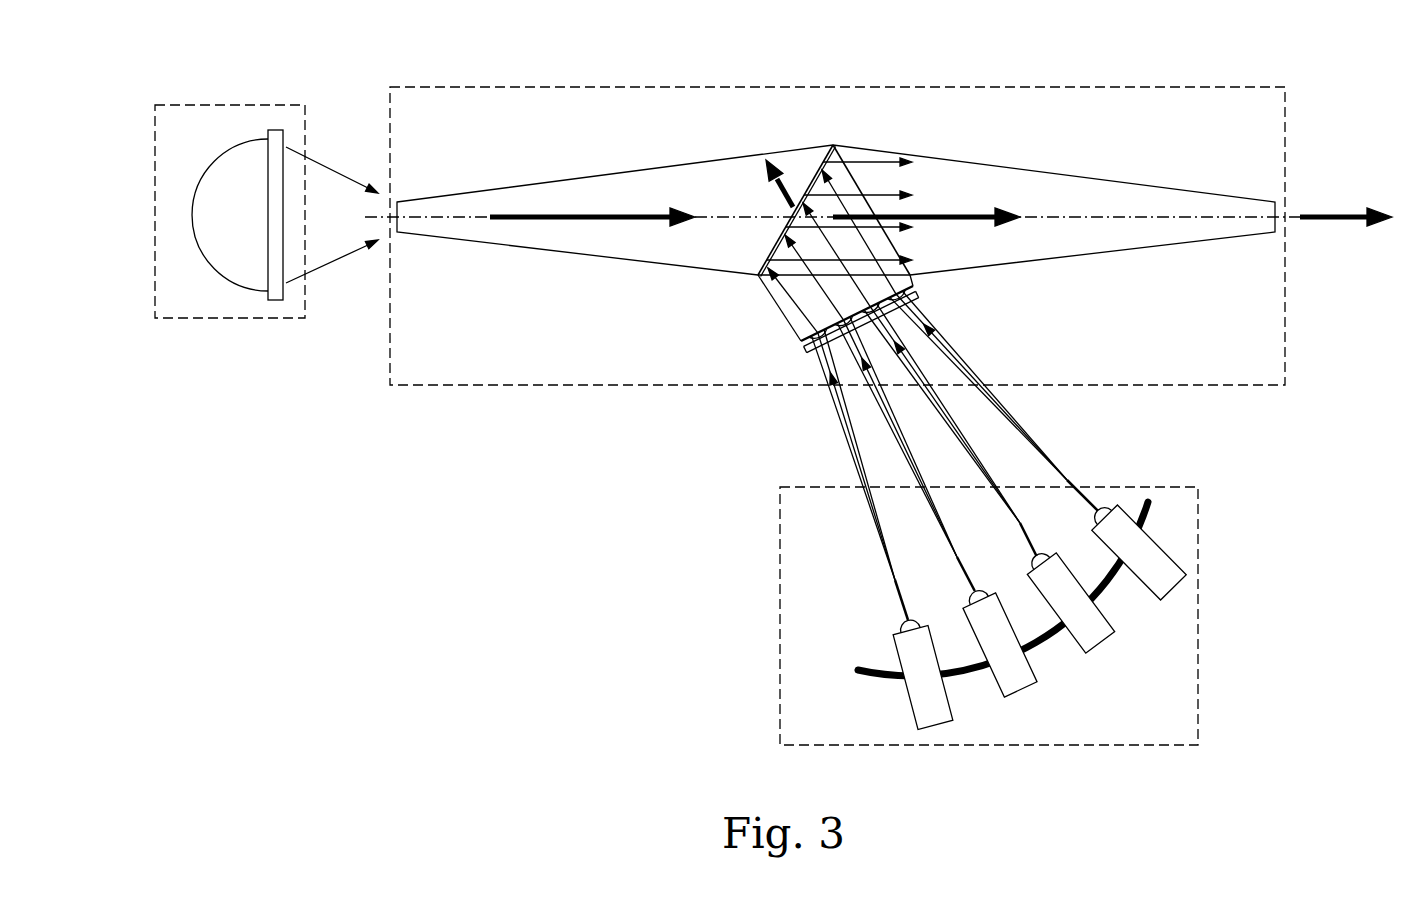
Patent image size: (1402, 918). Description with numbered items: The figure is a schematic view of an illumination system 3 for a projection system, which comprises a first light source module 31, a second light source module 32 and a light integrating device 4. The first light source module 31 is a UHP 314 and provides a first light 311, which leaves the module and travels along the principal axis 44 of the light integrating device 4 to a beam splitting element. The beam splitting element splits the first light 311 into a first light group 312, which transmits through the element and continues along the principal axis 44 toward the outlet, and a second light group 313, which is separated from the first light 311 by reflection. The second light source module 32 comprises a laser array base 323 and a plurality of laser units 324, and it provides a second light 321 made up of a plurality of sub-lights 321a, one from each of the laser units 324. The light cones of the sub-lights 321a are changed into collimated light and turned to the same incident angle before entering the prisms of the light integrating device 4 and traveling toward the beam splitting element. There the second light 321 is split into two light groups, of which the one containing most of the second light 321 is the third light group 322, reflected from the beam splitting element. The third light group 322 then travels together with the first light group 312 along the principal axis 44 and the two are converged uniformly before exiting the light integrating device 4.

The illumination system 3 is at (803, 24).
The first light source module 31 is at (180, 320).
The UHP 314 is at (278, 302).
The light integrating device 4 is at (957, 86).
The principal axis 44 is at (451, 203).
The first light 311 is at (576, 232).
The first light group 312 is at (963, 233).
The second light group 313 is at (797, 162).
The third light group 322 is at (877, 146).
The second light 321 is at (801, 431).
The sub-lights 321a is at (983, 360).
The second light source module 32 is at (780, 667).
The laser array base 323 is at (875, 675).
The laser units 324 is at (1097, 655).